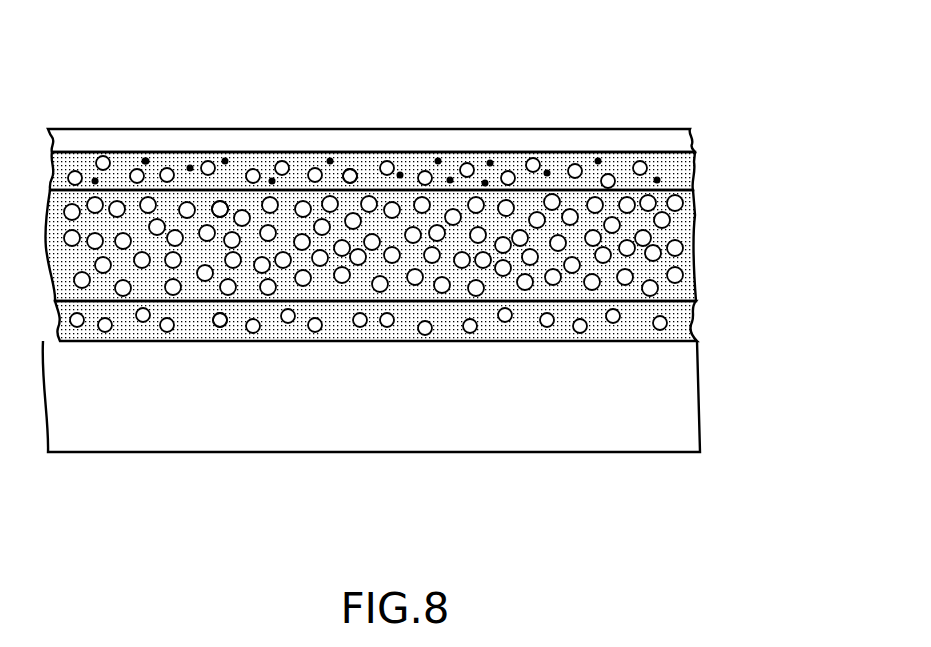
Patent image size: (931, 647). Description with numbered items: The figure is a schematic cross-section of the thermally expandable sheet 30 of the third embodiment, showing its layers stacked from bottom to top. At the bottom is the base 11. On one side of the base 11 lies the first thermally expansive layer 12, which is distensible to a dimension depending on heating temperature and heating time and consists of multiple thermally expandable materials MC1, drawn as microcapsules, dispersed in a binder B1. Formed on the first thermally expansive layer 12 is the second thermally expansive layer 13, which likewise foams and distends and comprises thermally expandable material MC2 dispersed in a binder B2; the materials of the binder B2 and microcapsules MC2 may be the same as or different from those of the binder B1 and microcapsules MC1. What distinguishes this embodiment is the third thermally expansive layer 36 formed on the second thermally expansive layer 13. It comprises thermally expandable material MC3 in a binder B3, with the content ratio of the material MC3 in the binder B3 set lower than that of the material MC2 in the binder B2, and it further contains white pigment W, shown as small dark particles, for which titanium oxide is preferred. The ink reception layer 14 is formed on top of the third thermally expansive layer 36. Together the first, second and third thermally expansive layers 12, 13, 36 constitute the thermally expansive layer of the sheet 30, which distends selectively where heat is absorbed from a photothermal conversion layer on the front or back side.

The thermally expandable sheet 30 is at (556, 58).
The base 11 is at (685, 418).
The first thermally expansive layer 12 is at (680, 328).
The second thermally expansive layer 13 is at (677, 218).
The third thermally expansive layer 36 is at (673, 171).
The ink reception layer 14 is at (655, 143).
The white pigment W is at (146, 160).
The thermally expandable material MC1 is at (222, 323).
The binder B1 is at (276, 333).
The thermally expandable material MC2 is at (222, 207).
The binder B2 is at (287, 210).
The thermally expandable material MC3 is at (350, 177).
The binder B3 is at (408, 178).